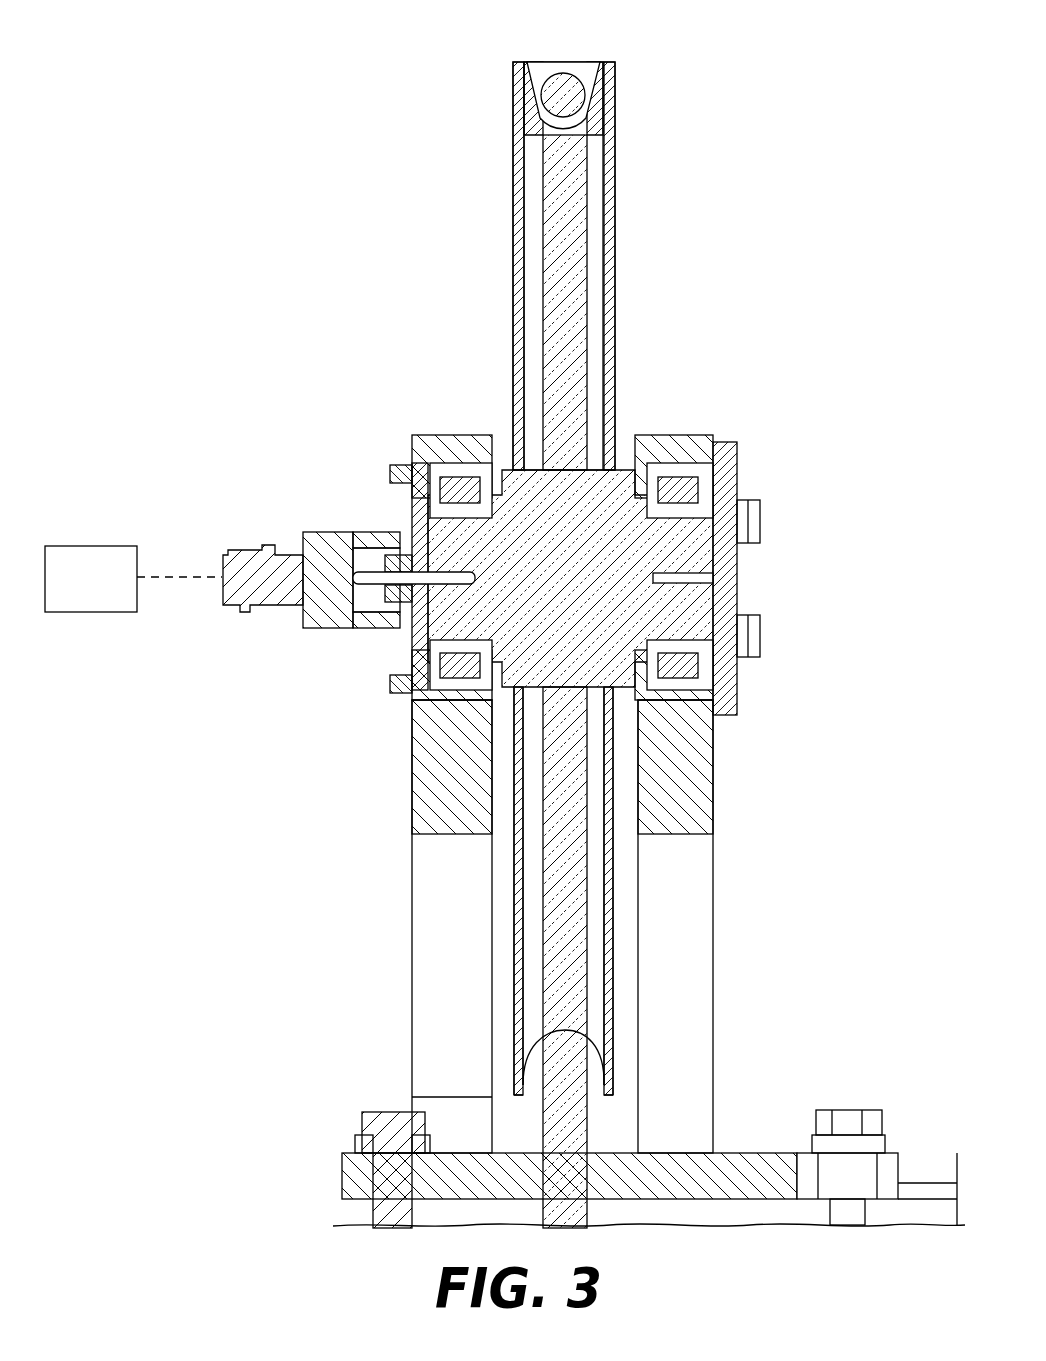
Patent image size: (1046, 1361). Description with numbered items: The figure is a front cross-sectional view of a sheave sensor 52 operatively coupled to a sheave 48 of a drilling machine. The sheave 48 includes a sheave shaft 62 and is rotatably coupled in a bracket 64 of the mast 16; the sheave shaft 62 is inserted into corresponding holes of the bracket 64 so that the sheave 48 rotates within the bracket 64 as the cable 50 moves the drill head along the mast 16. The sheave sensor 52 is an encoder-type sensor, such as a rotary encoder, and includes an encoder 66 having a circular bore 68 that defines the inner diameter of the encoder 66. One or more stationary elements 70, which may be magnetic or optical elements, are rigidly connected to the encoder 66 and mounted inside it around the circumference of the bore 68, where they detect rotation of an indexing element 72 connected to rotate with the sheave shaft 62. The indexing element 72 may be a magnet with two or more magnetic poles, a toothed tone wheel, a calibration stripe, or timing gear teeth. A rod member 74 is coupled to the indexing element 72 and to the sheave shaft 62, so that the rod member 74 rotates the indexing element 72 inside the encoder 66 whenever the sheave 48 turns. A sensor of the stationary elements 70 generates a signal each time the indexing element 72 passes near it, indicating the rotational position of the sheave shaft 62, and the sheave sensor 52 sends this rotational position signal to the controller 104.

The mast 16 is at (900, 1210).
The sheave 48 is at (513, 205).
The cable 50 is at (568, 72).
The sheave sensor 52 is at (349, 568).
The sheave shaft 62 is at (440, 530).
The bracket 64 is at (410, 765).
The encoder 66 is at (323, 628).
The bore 68 is at (330, 548).
The stationary elements 70 is at (348, 545).
The indexing element 72 is at (358, 636).
The rod member 74 is at (412, 545).
The controller 104 is at (92, 545).